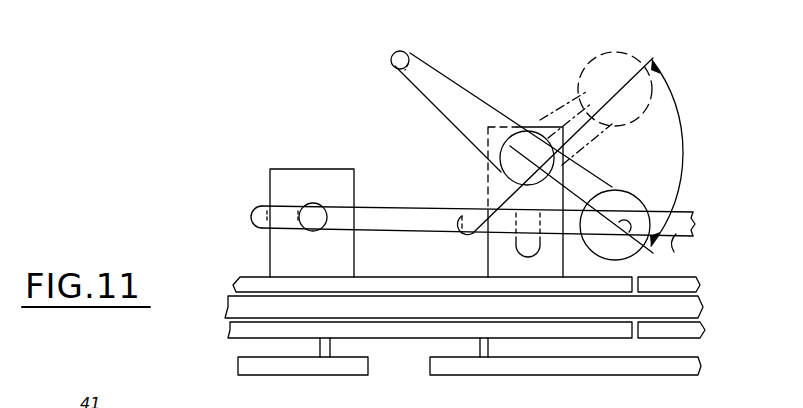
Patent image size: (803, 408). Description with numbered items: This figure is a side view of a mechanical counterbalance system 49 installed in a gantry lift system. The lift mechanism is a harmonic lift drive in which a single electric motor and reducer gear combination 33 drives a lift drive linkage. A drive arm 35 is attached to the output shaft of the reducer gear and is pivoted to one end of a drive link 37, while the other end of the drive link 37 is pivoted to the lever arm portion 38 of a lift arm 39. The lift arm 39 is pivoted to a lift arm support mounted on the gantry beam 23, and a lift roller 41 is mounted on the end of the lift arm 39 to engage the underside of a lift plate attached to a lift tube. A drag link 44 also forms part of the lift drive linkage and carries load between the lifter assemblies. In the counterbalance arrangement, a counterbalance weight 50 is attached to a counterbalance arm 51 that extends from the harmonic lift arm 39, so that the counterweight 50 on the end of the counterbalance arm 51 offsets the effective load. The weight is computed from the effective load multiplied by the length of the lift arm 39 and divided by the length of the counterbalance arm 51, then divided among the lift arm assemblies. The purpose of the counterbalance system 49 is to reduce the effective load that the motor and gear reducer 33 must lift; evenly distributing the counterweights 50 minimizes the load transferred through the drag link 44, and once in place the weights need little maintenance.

The gantry beam 23 is at (411, 312).
The electric motor and reducer gear combination 33 is at (324, 172).
The drive arm 35 is at (289, 202).
The drive link 37 is at (378, 217).
The lever arm portion 38 is at (500, 187).
The lift arm 39 is at (447, 84).
The lift roller 41 is at (393, 54).
The drag link 44 is at (682, 252).
The mechanical counterbalance system 49 is at (486, 30).
The counterbalance weight 50 is at (627, 192).
The counterbalance arm 51 is at (574, 174).